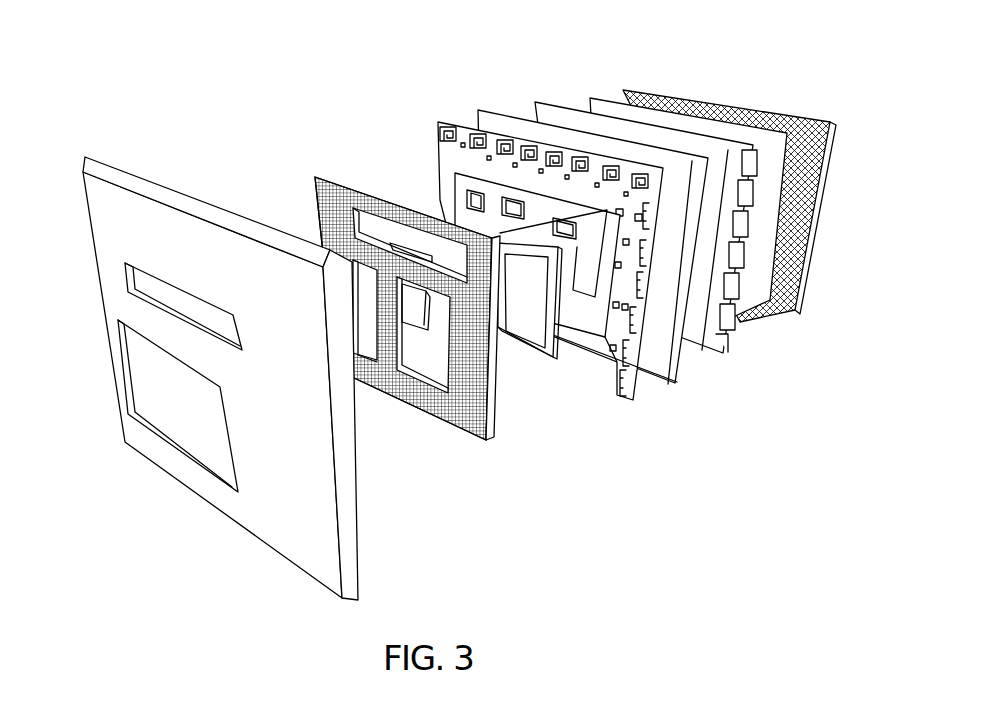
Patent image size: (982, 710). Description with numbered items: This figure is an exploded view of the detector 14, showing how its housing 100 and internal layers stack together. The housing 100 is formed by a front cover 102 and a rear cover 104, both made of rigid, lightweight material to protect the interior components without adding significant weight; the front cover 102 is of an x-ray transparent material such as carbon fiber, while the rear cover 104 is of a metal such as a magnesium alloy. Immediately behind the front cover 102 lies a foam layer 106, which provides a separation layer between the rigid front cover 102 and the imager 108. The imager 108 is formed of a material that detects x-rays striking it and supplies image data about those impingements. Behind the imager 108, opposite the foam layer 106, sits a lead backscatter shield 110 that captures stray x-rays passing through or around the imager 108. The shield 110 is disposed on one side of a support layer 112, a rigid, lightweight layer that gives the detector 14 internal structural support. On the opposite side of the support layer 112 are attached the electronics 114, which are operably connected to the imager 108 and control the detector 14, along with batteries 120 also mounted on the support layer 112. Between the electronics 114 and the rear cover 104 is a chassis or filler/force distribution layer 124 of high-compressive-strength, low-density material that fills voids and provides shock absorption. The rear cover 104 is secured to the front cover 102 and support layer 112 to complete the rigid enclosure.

The detector 14 is at (475, 517).
The housing 100 is at (400, 165).
The front cover 102 is at (818, 118).
The rear cover 104 is at (143, 445).
The foam layer 106 is at (592, 96).
The imager 108 is at (538, 100).
The lead backscatter shield 110 is at (503, 108).
The support layer 112 is at (658, 364).
The electronics 114 is at (608, 385).
The batteries 120 is at (515, 342).
The force distribution layer 124 is at (318, 172).